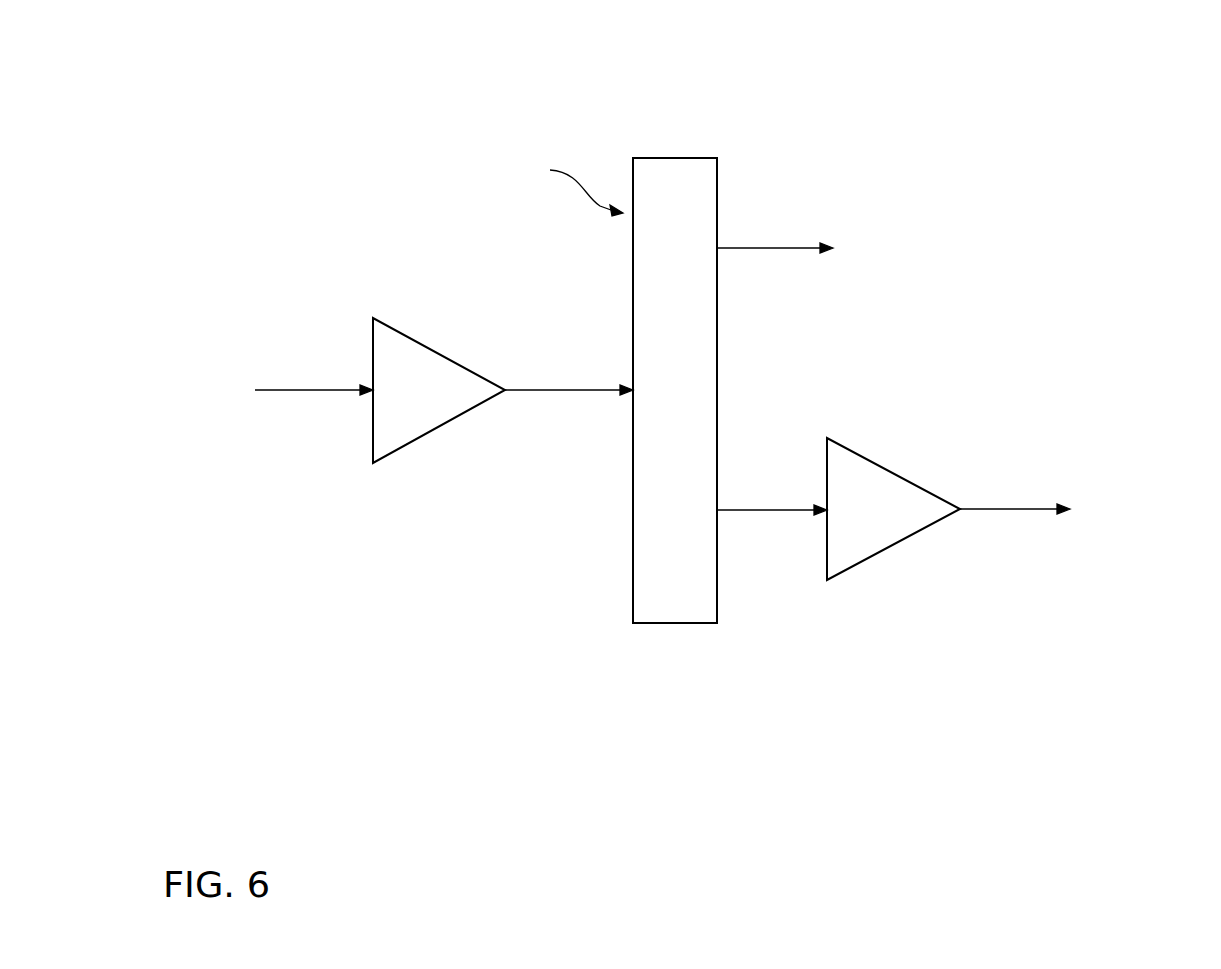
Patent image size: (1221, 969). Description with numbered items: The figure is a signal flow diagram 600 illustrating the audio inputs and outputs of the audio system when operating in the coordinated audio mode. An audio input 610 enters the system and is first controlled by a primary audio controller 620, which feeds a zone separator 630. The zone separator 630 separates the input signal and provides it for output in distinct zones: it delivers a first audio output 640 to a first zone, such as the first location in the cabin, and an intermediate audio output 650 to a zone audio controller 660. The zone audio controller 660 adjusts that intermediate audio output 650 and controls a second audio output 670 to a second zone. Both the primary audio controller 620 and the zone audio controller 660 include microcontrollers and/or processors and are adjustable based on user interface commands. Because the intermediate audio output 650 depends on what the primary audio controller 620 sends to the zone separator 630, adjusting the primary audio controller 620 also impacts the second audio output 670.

The signal flow diagram 600 is at (243, 115).
The audio input 610 is at (265, 408).
The primary audio controller 620 is at (445, 407).
The zone separator 630 is at (700, 398).
The first audio output 640 is at (825, 251).
The intermediate audio output 650 is at (752, 532).
The zone audio controller 660 is at (898, 525).
The second audio output 670 is at (1065, 503).